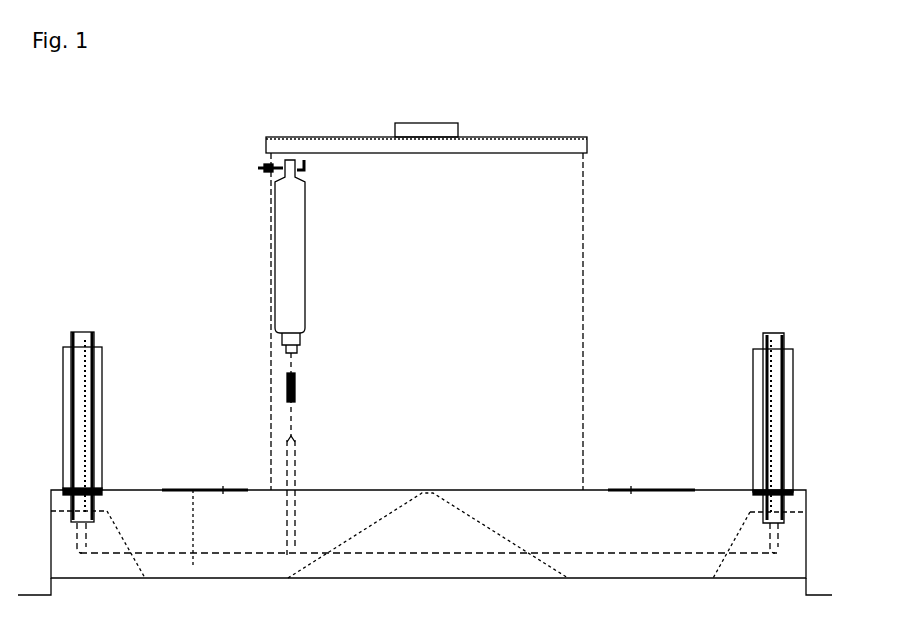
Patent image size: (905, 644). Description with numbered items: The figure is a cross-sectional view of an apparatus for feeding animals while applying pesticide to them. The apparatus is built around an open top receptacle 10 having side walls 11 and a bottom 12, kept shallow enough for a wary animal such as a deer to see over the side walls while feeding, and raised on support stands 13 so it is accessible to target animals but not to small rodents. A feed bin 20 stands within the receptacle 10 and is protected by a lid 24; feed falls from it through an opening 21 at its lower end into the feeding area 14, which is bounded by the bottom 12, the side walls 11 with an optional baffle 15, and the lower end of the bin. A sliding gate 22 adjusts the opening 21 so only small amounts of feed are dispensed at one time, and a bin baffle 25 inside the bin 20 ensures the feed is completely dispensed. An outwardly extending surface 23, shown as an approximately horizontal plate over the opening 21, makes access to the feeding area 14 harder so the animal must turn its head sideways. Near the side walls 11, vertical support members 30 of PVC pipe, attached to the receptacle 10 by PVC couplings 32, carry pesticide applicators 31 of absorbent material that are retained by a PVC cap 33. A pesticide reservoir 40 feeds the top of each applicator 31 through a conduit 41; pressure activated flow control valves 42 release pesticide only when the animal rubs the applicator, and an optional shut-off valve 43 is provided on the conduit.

The receptacle 10 is at (610, 530).
The side walls 11 is at (806, 540).
The bottom 12 is at (622, 580).
The support stands 13 is at (812, 596).
The feeding area 14 is at (690, 565).
The baffle 15 is at (720, 560).
The bin 20 is at (583, 302).
The opening 21 is at (183, 573).
The sliding gate 22 is at (197, 530).
The outwardly extending surface 23 is at (173, 488).
The lid 24 is at (588, 148).
The bin baffle 25 is at (497, 533).
The vertical support members 30 is at (782, 395).
The pesticide applicators 31 is at (793, 445).
The PVC couplings 32 is at (784, 502).
The PVC cap 33 is at (784, 338).
The pesticide reservoir 40 is at (295, 273).
The conduit 41 is at (297, 470).
The pressure activated flow control valves 42 is at (88, 365).
The shut-off valve 43 is at (295, 388).